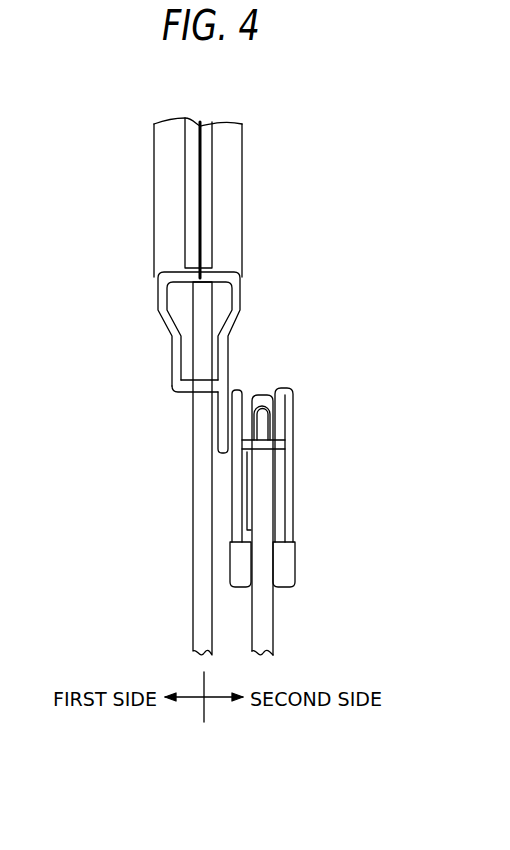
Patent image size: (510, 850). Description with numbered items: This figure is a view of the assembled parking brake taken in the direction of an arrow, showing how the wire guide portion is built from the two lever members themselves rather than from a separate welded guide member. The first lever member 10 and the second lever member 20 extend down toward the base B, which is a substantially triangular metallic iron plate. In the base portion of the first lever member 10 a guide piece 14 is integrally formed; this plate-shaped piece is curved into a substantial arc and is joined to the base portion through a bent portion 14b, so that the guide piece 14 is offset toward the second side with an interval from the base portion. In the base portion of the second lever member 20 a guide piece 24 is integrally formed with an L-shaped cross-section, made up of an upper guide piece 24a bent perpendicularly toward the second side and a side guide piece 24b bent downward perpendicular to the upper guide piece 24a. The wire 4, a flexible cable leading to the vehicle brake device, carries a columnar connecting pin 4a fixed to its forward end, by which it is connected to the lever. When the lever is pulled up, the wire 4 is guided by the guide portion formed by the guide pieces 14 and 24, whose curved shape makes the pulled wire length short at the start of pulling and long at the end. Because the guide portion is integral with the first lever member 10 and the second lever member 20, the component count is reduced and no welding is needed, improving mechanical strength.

The first lever member 10 is at (154, 192).
The second lever member 20 is at (243, 190).
The guide piece 14 is at (188, 388).
The bent portion 14b is at (197, 393).
The base B is at (198, 547).
The wire 4 is at (287, 496).
The connecting pin 4a is at (251, 400).
The guide piece 24 is at (306, 487).
The upper guide piece 24a is at (292, 447).
The side guide piece 24b is at (288, 500).